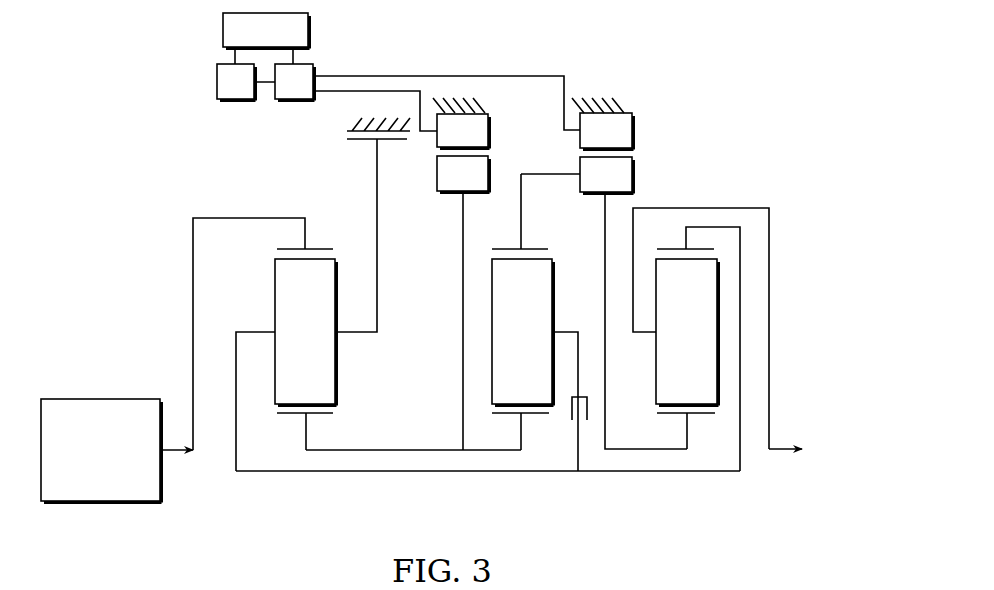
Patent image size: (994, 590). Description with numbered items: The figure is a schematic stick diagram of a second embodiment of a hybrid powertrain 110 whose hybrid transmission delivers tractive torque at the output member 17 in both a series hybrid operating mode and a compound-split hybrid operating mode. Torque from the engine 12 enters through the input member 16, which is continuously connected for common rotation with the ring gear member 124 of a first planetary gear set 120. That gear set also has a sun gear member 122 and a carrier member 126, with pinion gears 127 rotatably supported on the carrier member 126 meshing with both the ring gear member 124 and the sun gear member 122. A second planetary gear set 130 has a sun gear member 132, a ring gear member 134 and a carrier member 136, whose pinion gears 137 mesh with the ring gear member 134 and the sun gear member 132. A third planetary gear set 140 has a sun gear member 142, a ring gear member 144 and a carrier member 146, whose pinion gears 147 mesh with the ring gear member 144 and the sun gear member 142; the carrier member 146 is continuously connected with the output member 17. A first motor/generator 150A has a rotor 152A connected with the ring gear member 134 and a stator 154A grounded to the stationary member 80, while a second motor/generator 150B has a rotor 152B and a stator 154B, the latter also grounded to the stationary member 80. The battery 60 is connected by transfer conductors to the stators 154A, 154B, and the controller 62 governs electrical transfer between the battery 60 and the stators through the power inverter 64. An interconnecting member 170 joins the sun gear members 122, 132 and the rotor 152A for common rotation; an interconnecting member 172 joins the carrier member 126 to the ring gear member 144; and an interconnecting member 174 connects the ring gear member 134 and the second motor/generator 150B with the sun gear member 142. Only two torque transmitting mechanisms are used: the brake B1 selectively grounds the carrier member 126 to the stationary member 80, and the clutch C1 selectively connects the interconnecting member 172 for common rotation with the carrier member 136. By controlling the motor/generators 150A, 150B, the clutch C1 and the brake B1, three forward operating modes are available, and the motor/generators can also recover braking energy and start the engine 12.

The hybrid powertrain 110 is at (150, 155).
The engine 12 is at (101, 451).
The input member 16 is at (172, 452).
The output member 17 is at (782, 448).
The battery 60 is at (266, 31).
The controller 62 is at (246, 74).
The power inverter 64 is at (427, 89).
The stationary member 80 is at (362, 119).
The brake B1 is at (340, 137).
The clutch C1 is at (572, 435).
The planetary gear set 120 is at (265, 357).
The sun gear member 122 is at (318, 415).
The ring gear member 124 is at (288, 248).
The carrier member 126 is at (258, 332).
The pinion gears 127 is at (306, 332).
The planetary gear set 130 is at (536, 354).
The sun gear member 132 is at (538, 417).
The ring gear member 134 is at (510, 248).
The carrier member 136 is at (563, 332).
The pinion gears 137 is at (523, 332).
The planetary gear set 140 is at (694, 344).
The sun gear member 142 is at (702, 415).
The ring gear member 144 is at (672, 248).
The carrier member 146 is at (645, 333).
The pinion gears 147 is at (687, 332).
The first motor/generator 150A is at (438, 282).
The rotor 152A is at (463, 303).
The stator 154A is at (463, 131).
The second motor/generator 150B is at (653, 130).
The rotor 152B is at (607, 175).
The stator 154B is at (607, 131).
The interconnecting member 170 is at (443, 450).
The interconnecting member 172 is at (360, 472).
The interconnecting member 174 is at (605, 243).